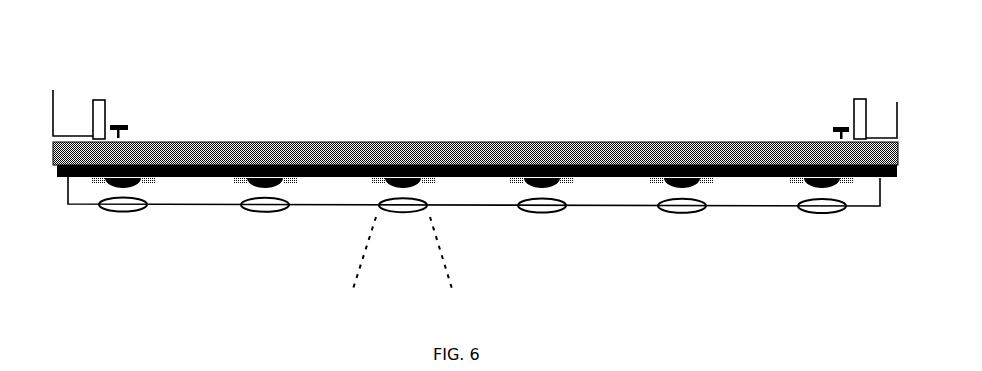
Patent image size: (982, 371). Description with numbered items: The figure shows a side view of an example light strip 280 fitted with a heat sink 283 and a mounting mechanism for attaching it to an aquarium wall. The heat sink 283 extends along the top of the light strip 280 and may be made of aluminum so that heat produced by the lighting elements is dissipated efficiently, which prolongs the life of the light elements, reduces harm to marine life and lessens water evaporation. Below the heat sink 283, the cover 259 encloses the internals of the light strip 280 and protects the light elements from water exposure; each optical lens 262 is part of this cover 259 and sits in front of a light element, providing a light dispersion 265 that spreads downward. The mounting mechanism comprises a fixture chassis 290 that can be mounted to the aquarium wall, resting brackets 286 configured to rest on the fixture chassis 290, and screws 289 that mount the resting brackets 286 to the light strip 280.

The light strip 280 is at (479, 70).
The heat sink 283 is at (465, 153).
The cover 259 is at (77, 204).
The optical lens 262 is at (123, 212).
The light dispersion 265 is at (358, 270).
The fixture chassis 290 is at (53, 90).
The resting bracket 286 is at (105, 115).
The screw 289 is at (128, 127).